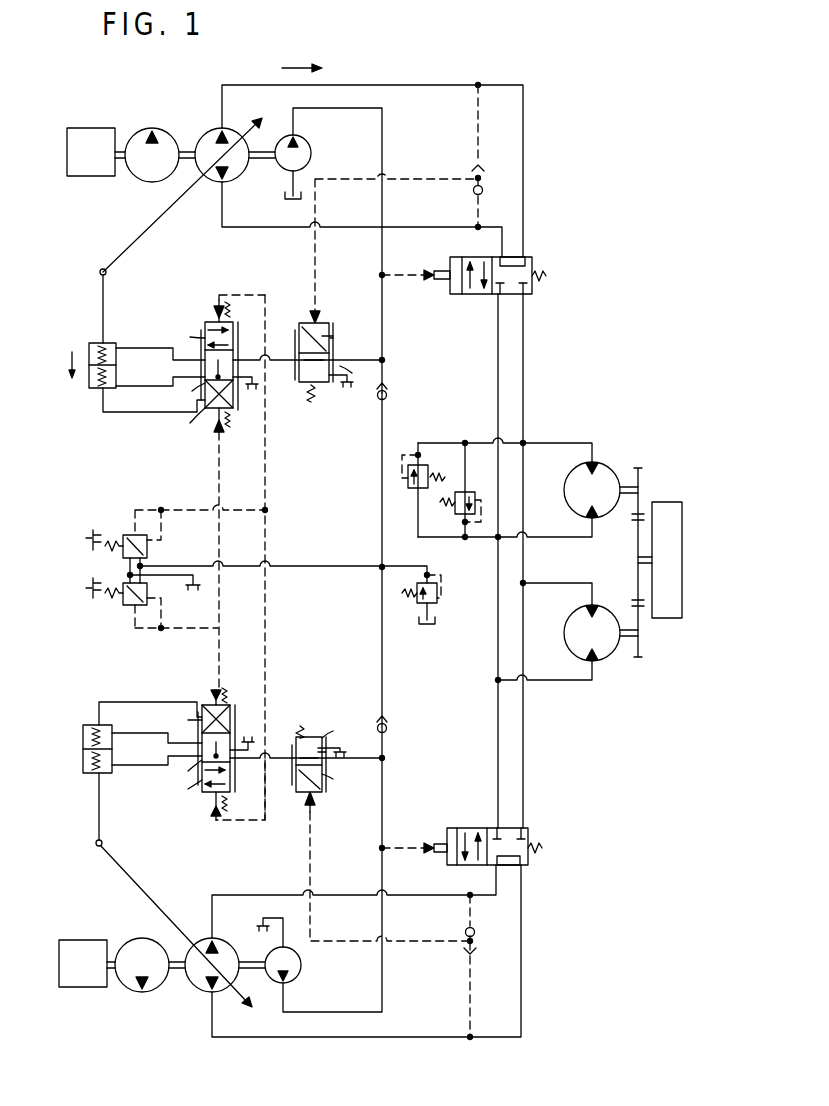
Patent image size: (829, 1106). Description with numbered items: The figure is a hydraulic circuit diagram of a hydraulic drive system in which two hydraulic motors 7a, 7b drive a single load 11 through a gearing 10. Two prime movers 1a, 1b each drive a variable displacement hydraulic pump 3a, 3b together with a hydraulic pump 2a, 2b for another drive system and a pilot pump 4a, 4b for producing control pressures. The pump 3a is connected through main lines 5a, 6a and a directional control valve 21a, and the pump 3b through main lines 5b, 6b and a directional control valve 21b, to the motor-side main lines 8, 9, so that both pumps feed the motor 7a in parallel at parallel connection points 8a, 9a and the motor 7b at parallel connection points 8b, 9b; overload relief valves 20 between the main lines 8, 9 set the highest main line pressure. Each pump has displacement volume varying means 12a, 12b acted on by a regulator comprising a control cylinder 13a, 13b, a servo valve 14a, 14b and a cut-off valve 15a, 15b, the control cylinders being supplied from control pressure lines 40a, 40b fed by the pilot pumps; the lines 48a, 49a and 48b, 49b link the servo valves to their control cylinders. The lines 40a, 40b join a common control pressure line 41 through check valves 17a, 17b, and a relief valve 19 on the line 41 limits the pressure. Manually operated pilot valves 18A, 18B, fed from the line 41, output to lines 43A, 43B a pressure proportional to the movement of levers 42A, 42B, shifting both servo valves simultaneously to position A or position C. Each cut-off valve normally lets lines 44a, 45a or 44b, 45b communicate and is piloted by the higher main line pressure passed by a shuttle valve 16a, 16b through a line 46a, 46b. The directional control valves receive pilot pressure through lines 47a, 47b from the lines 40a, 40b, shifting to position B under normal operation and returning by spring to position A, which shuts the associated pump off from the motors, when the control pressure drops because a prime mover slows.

The prime mover 1a is at (92, 128).
The hydraulic pump 2a is at (150, 129).
The variable displacement hydraulic pump 3a is at (203, 129).
The pilot pump 4a is at (310, 140).
The main line 5a is at (433, 86).
The main line 6a is at (458, 227).
The hydraulic motor 7a is at (606, 468).
The parallel connection point 8a is at (524, 444).
The parallel connection point 9a is at (497, 540).
The main line 8 is at (524, 379).
The main line 9 is at (496, 379).
The gearing 10 is at (640, 648).
The load 11 is at (675, 502).
The displacement volume varying means 12a is at (160, 216).
The control cylinder 13a is at (90, 343).
The servo valve 14a is at (207, 322).
The cut-off valve 15a is at (300, 323).
The shuttle valve 16a is at (474, 178).
The check valve 17a is at (387, 395).
The manually operated pilot valve 18A is at (123, 536).
The manually operated pilot valve 18B is at (122, 605).
The relief valve 19 is at (438, 603).
The overload relief valve 20 is at (417, 454).
The directional control valve 21a is at (533, 266).
The control pressure line 40a is at (337, 250).
The common control pressure line 41 is at (380, 521).
The manually-operated lever 42A is at (90, 552).
The manually-operated lever 42B is at (90, 598).
The output line 43A is at (192, 510).
The output line 43B is at (178, 631).
The line 44a is at (374, 380).
The line 45a is at (275, 375).
The line 46a is at (318, 274).
The line 47a is at (405, 268).
The control line (first) 48a is at (135, 342).
The control line (first) 49a is at (135, 382).
The prime mover 1b is at (77, 987).
The hydraulic pump 2b is at (140, 992).
The variable displacement hydraulic pump 3b is at (199, 992).
The pilot pump 4b is at (300, 959).
The main line 5b is at (443, 1037).
The main line 6b is at (437, 895).
The hydraulic motor 7b is at (606, 660).
The parallel connection point 8b is at (524, 586).
The parallel connection point 9b is at (497, 683).
The displacement volume varying means 12b is at (130, 889).
The control cylinder 13b is at (86, 725).
The servo valve 14b is at (204, 705).
The cut-off valve 15b is at (321, 737).
The shuttle valve 16b is at (468, 947).
The check valve 17b is at (387, 729).
The directional control valve 21b is at (529, 836).
The control pressure line 40b is at (384, 979).
The line 44b is at (366, 776).
The line 45b is at (270, 800).
The line 46b is at (314, 941).
The line 47b is at (410, 841).
The control line (second) 48b is at (158, 768).
The control line (second) 49b is at (160, 740).